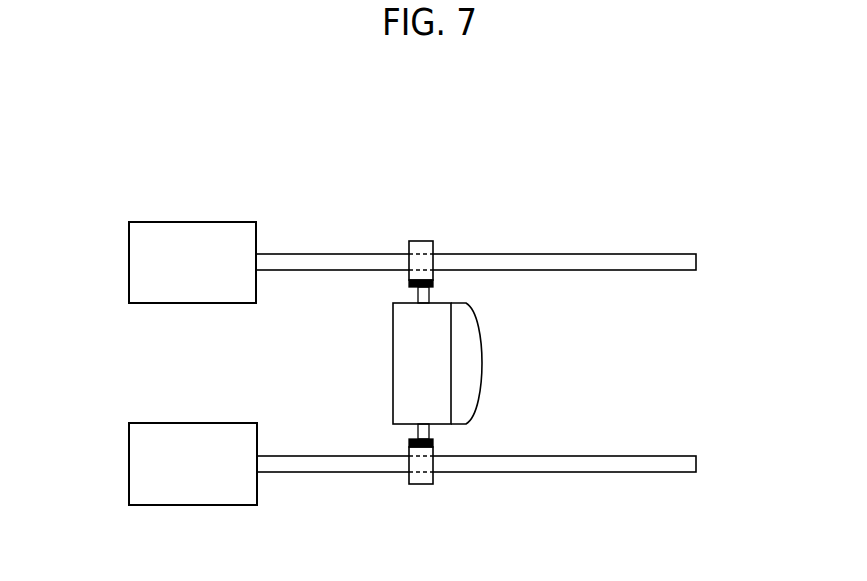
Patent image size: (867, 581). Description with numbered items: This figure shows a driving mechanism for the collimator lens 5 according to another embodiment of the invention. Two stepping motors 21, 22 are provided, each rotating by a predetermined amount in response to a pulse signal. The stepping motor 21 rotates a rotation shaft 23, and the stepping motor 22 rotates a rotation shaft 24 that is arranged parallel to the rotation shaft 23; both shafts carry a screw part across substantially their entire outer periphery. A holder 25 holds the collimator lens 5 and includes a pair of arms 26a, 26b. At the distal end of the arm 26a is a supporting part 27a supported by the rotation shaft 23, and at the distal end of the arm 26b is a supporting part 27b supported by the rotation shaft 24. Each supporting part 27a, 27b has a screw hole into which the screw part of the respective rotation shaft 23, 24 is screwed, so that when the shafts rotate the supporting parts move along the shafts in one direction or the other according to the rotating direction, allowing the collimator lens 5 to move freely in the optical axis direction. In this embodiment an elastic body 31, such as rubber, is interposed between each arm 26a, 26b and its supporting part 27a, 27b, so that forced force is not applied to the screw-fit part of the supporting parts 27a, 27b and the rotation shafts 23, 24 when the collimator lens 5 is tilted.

The stepping motor 21 is at (130, 262).
The stepping motor 22 is at (130, 468).
The rotation shaft 23 is at (566, 253).
The rotation shaft 24 is at (568, 474).
The holder 25 is at (402, 369).
The arm 26a is at (417, 298).
The arm 26b is at (417, 435).
The supporting part 27a is at (424, 240).
The supporting part 27b is at (421, 486).
The elastic body 31 is at (434, 283).
The collimator lens 5 is at (478, 355).